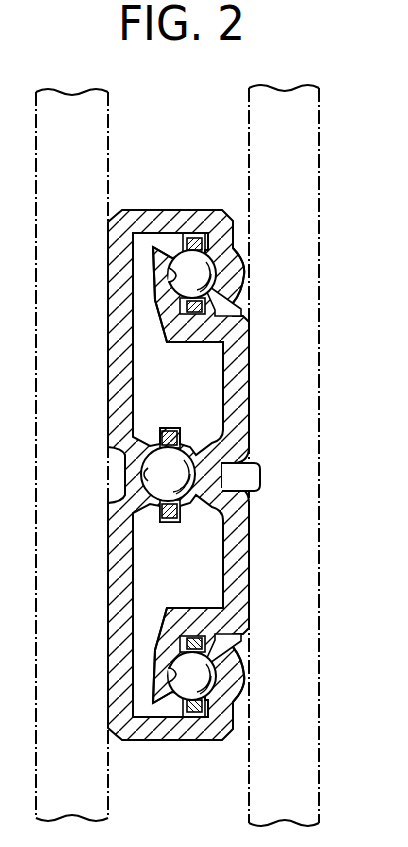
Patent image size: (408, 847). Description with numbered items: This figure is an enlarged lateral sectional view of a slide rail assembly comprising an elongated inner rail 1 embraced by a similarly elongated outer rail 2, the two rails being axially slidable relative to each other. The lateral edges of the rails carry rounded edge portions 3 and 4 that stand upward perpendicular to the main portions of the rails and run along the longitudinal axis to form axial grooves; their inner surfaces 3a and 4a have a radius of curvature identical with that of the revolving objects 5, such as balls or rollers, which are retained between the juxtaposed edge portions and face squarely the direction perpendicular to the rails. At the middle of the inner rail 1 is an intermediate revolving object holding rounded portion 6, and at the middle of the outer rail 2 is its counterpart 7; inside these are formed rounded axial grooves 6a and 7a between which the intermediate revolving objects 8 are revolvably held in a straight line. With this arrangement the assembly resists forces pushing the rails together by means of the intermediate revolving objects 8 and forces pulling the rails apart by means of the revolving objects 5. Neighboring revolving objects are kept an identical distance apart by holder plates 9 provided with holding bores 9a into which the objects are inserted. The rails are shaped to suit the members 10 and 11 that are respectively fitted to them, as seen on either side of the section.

The inner rail 1 is at (249, 399).
The outer rail 2 is at (108, 350).
The rounded edge portion 3 is at (157, 258).
The inner surface 3a is at (165, 274).
The rounded edge portion 4 is at (237, 278).
The inner surface 4a is at (224, 309).
The revolving object 5 is at (233, 243).
The intermediate revolving object holding rounded portion 6 is at (250, 465).
The rounded axial groove 6a is at (243, 491).
The intermediate revolving object holding rounded portion 7 is at (128, 468).
The rounded axial groove 7a is at (150, 477).
The intermediate revolving object 8 is at (170, 486).
The holder plate 9 is at (192, 240).
The holding bore 9a is at (184, 250).
The member 10 is at (311, 152).
The member 11 is at (111, 148).